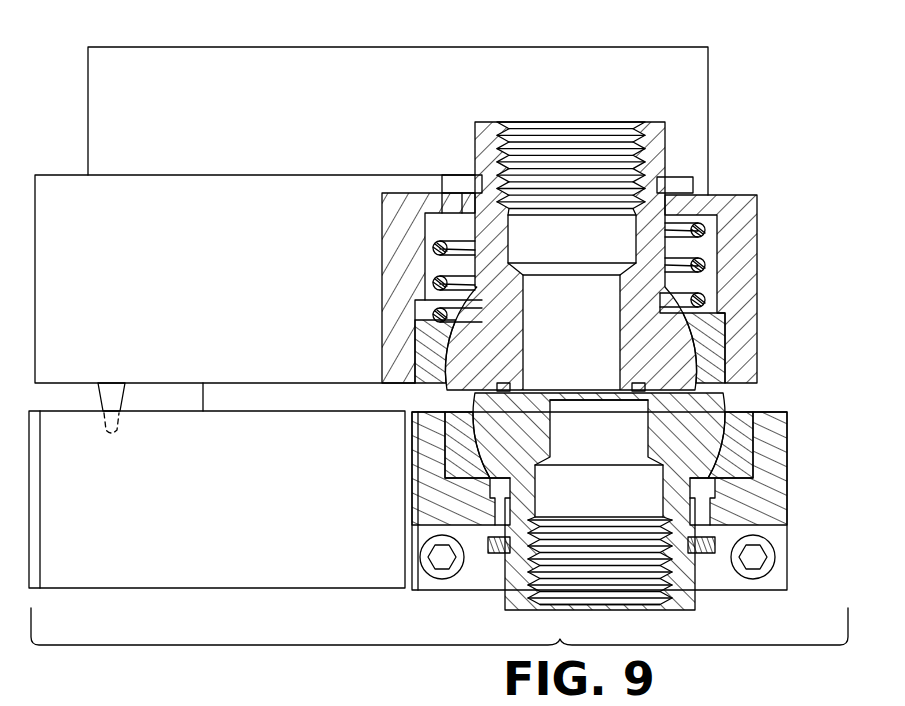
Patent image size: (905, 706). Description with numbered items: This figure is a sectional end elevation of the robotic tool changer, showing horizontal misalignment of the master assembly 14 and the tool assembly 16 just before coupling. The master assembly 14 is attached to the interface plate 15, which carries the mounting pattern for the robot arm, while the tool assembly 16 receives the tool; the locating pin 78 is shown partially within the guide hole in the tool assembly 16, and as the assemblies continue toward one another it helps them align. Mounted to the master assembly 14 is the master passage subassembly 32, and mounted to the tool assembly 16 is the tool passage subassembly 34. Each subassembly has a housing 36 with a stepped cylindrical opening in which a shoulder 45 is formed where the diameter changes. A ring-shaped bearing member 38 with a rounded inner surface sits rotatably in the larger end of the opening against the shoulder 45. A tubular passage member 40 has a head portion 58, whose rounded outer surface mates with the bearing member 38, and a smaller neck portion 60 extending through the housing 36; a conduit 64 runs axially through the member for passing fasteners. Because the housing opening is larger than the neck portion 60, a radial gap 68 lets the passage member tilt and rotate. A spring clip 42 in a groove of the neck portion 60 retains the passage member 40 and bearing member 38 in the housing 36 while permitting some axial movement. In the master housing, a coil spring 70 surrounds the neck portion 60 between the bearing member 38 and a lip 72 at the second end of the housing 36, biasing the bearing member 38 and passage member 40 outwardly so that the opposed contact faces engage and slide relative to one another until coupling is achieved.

The master assembly 14 is at (72, 192).
The interface plate 15 is at (262, 62).
The tool assembly 16 is at (193, 578).
The master passage subassembly 32 is at (366, 301).
The tool passage subassembly 34 is at (378, 509).
The housing 36 is at (758, 227).
The bearing member 38 is at (700, 392).
The tubular passage member 40 is at (700, 262).
The spring clip 42 is at (462, 177).
The shoulder 45 is at (718, 310).
The head portion 58 is at (690, 346).
The neck portion 60 is at (668, 133).
The conduit 64 is at (612, 122).
The radial gap 68 is at (688, 207).
The coil spring 70 is at (434, 248).
The lip 72 is at (440, 213).
The locating pin 78 is at (118, 401).